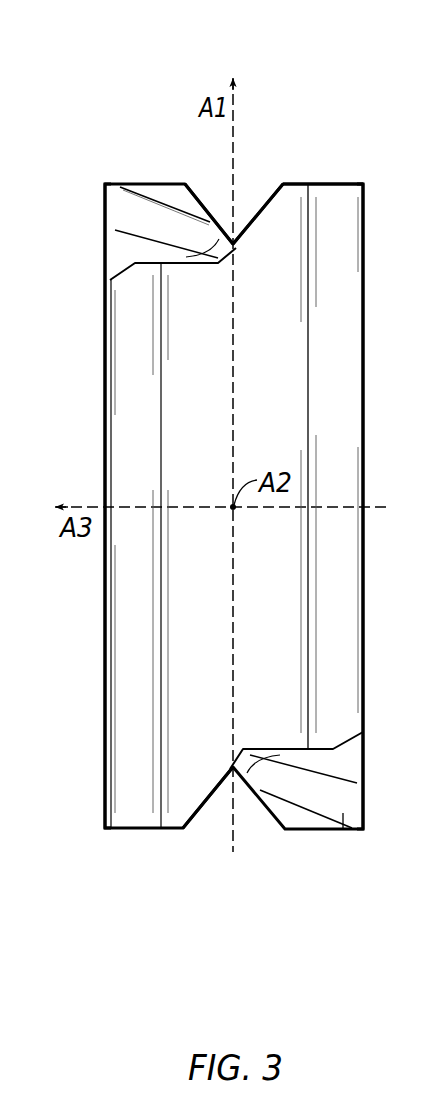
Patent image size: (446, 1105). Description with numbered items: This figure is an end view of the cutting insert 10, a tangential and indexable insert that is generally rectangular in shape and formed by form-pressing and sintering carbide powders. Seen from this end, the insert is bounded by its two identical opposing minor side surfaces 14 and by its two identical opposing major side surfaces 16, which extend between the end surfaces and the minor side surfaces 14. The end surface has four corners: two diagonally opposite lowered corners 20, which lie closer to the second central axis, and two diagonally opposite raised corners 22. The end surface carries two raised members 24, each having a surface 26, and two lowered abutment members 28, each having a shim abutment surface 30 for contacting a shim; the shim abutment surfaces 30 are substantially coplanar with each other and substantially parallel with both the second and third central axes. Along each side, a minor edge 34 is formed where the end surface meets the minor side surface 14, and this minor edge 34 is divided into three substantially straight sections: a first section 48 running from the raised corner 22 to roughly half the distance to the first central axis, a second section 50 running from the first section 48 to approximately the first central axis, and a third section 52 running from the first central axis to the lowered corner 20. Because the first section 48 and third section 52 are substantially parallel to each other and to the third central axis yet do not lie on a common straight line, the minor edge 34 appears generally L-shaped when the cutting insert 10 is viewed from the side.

The cutting insert 10 is at (105, 51).
The minor side surface 14 is at (136, 653).
The major side surface 16 is at (100, 360).
The lowered corner 20 is at (103, 279).
The raised corner 22 is at (105, 182).
The raised member 24 is at (134, 216).
The surface 26 is at (311, 183).
The lowered abutment member 28 is at (183, 262).
The shim abutment surface 30 is at (150, 262).
The minor edge 34 is at (263, 200).
The first section 48 is at (298, 183).
The second section 50 is at (224, 228).
The third section 52 is at (165, 258).